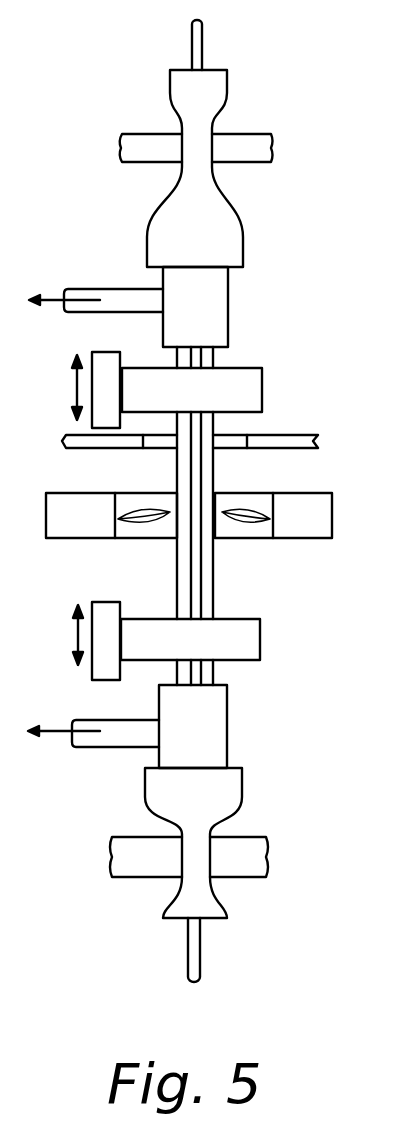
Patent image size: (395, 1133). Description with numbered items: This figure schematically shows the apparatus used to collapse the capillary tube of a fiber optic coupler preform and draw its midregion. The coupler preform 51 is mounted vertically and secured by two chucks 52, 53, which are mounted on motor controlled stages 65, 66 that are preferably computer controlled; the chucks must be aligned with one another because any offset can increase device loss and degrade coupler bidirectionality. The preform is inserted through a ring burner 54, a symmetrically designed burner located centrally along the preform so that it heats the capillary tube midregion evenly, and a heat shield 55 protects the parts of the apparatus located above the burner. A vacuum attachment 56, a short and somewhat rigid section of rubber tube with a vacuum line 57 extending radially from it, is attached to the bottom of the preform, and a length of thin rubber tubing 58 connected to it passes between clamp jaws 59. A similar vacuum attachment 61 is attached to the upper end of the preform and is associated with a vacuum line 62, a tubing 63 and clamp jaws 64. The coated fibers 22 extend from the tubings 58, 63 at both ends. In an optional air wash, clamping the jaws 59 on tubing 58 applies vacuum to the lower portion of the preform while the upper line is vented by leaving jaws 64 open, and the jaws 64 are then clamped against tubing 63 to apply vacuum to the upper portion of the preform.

The coated fiber 22 is at (203, 37).
The coupler preform 51 is at (215, 578).
The chuck 52 is at (263, 390).
The chuck 53 is at (262, 640).
The ring burner 54 is at (296, 493).
The heat shield 55 is at (275, 436).
The vacuum attachment 56 is at (218, 722).
The vacuum line 57 is at (97, 748).
The thin rubber tubing 58 is at (230, 791).
The clamp jaws 59 is at (272, 853).
The vacuum attachment 61 is at (220, 305).
The vacuum line 62 is at (100, 288).
The tubing 63 is at (230, 211).
The clamp jaws 64 is at (275, 149).
The motor controlled stage 65 is at (104, 365).
The motor controlled stage 66 is at (105, 610).